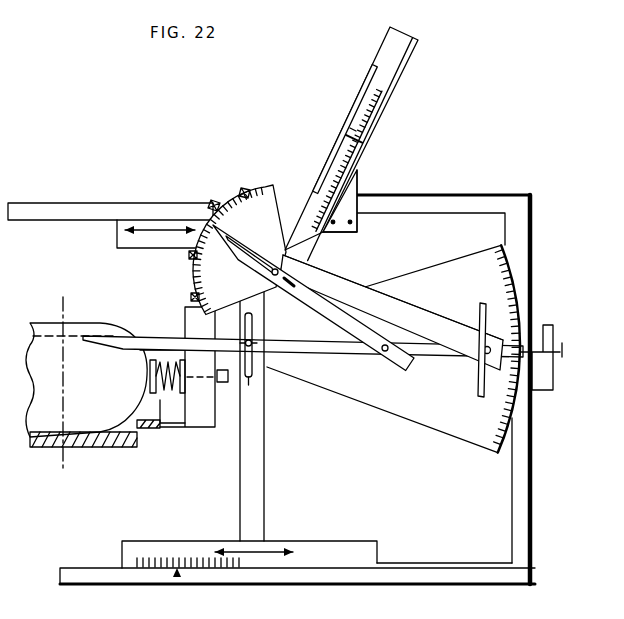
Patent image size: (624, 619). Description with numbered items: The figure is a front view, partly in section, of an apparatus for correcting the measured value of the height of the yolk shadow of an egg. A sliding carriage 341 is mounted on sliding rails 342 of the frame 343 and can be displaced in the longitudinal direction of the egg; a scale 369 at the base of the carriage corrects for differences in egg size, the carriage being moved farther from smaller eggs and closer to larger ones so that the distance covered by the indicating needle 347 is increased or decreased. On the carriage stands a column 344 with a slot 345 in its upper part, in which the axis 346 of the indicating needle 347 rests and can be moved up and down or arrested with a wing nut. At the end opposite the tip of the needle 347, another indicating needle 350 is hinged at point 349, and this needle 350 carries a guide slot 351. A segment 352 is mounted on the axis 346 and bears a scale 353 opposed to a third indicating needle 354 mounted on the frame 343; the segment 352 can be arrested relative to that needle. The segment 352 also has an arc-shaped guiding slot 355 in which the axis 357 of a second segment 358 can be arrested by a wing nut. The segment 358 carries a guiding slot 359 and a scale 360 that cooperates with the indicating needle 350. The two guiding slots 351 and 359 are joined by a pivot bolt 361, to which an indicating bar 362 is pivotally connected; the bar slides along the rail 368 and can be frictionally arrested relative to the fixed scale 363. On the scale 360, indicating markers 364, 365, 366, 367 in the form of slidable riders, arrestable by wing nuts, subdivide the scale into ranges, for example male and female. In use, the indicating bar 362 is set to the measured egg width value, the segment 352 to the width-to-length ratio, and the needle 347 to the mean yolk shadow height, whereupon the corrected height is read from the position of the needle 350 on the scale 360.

The sliding carriage 341 is at (347, 543).
The sliding rails 342 is at (447, 563).
The frame 343 is at (513, 528).
The column 344 is at (258, 478).
The slot 345 is at (267, 380).
The axis 346 is at (263, 333).
The indicating needle 347 is at (170, 343).
The hinge point 349 is at (385, 360).
The indicating needle 350 is at (332, 308).
The guide slot 351 is at (306, 254).
The segment 352 is at (402, 403).
The scale 353 is at (515, 418).
The indicating needle 354 is at (577, 345).
The guiding slot 355 is at (480, 380).
The axis 357 is at (480, 347).
The segment 358 is at (277, 197).
The guiding slot 359 is at (333, 288).
The scale 360 is at (213, 277).
The pivot bolt 361 is at (272, 262).
The indicating bar 362 is at (352, 122).
The fixed scale 363 is at (388, 118).
The indicating marker 364 is at (189, 298).
The indicating marker 365 is at (188, 256).
The indicating marker 366 is at (217, 200).
The indicating marker 367 is at (243, 188).
The rail 368 is at (313, 173).
The scale 369 is at (217, 575).